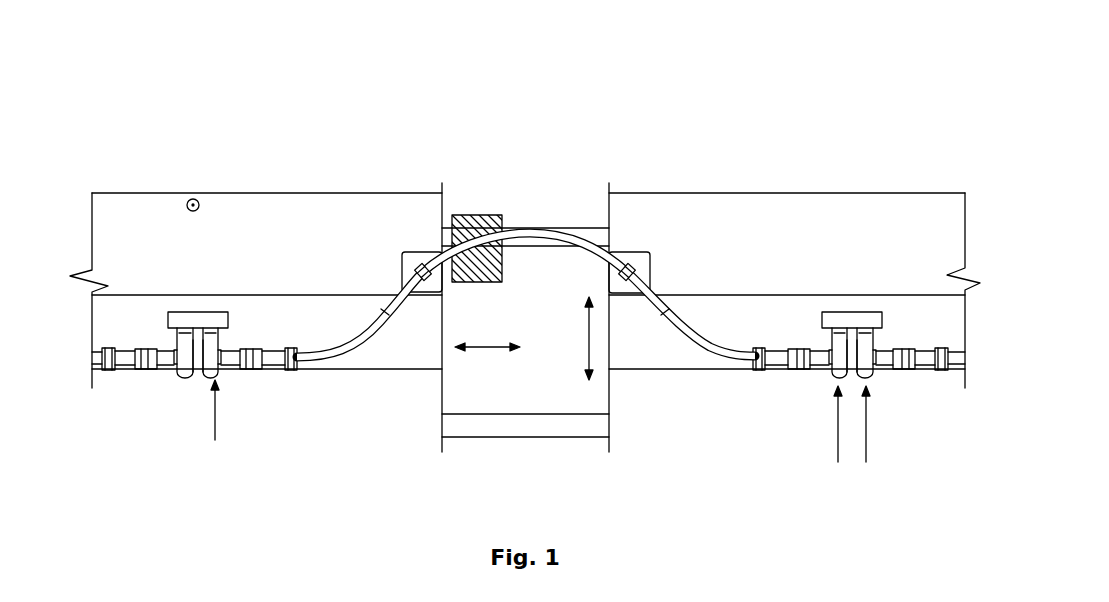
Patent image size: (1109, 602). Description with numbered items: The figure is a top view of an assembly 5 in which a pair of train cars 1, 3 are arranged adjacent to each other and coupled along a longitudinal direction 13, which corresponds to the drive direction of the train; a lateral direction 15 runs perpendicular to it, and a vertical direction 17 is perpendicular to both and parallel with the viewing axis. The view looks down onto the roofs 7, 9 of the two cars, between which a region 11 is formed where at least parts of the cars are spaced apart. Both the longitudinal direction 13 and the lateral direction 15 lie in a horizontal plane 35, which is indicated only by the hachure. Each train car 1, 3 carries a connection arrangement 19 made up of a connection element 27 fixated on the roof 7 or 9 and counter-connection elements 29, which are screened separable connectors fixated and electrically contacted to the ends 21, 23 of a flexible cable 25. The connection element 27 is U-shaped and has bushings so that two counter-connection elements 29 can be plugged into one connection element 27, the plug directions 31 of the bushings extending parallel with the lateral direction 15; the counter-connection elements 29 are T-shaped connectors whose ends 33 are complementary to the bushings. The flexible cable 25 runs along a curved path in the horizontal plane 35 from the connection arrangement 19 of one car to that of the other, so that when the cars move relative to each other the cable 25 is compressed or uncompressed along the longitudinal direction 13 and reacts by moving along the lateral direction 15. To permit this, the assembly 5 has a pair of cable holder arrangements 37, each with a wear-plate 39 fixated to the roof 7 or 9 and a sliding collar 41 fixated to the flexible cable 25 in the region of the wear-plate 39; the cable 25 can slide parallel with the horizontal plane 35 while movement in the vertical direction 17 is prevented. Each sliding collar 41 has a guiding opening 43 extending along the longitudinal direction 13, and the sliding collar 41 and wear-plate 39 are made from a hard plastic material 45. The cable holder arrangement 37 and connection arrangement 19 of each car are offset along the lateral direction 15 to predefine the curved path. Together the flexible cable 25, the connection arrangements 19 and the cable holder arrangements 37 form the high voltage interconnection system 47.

The train car 1 is at (192, 98).
The train car 3 is at (784, 96).
The assembly 5 is at (75, 62).
The roof 7 is at (346, 420).
The roof 9 is at (661, 410).
The region 11 is at (442, 464).
The longitudinal direction 13 is at (485, 350).
The lateral direction 15 is at (588, 342).
The vertical direction 17 is at (196, 199).
The connection arrangement 19 is at (214, 302).
The end 21 is at (234, 383).
The end 23 is at (784, 391).
The flexible cable 25 is at (540, 236).
The connection element 27 is at (185, 320).
The counter-connection element 29 is at (166, 360).
The plug direction 31 is at (215, 400).
The end 33 is at (215, 348).
The horizontal plane 35 is at (487, 214).
The cable holder arrangement 37 is at (415, 240).
The wear-plate 39 is at (412, 265).
The sliding collar 41 is at (434, 284).
The guiding opening 43 is at (398, 270).
The hard plastic material 45 is at (620, 262).
The high voltage interconnection system 47 is at (225, 120).